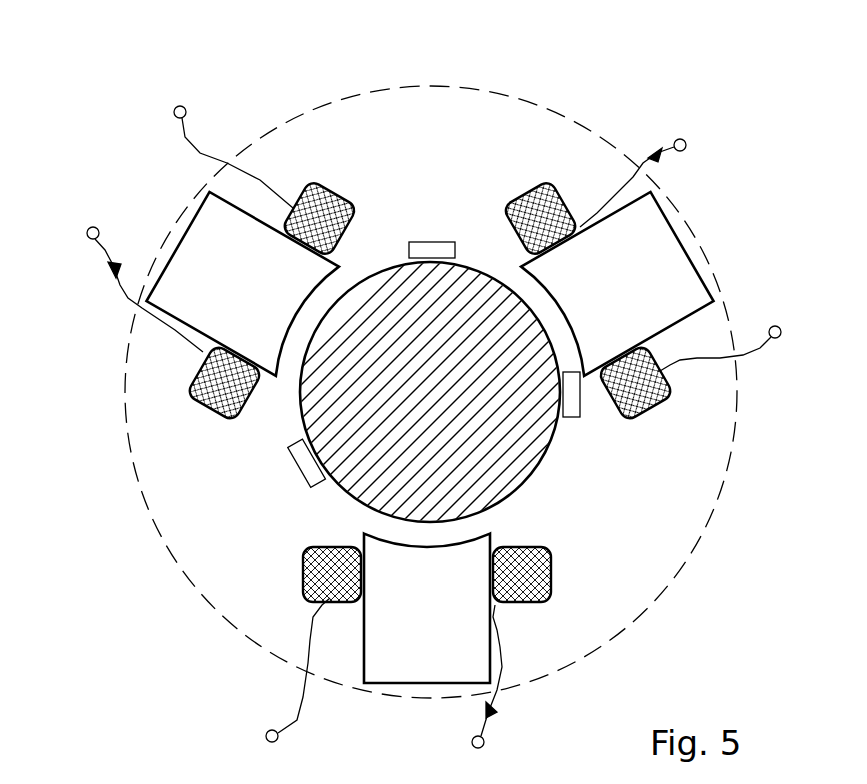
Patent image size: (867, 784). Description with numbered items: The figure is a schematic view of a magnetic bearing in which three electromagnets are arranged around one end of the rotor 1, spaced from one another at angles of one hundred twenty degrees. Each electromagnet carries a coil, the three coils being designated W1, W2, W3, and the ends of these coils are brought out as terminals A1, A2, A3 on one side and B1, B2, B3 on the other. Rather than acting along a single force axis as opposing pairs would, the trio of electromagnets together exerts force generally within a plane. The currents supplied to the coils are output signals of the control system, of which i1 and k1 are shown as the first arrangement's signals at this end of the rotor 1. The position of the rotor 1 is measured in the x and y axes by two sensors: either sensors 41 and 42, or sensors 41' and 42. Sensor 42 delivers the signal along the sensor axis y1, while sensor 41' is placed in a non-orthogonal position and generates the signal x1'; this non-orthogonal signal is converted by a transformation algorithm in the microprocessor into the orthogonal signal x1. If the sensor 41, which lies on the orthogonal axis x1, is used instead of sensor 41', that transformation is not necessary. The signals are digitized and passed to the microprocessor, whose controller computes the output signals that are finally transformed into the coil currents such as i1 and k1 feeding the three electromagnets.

The rotor (permanent magnet) 1 is at (430, 400).
The sensor 41 is at (593, 416).
The sensor 41' is at (278, 463).
The sensor 42 is at (430, 250).
The coil W1 is at (588, 205).
The coil W2 is at (303, 595).
The coil W3 is at (193, 365).
The coil end A1 is at (649, 180).
The coil end B1 is at (726, 336).
The coil end A2 is at (482, 691).
The coil end B2 is at (293, 686).
The coil end A3 is at (140, 277).
The coil end B3 is at (226, 143).
The output signal i1 is at (574, 430).
The output signal k1 is at (101, 278).
The x-axis x is at (110, 388).
The y-axis y is at (427, 717).
The orthogonal signal x1 is at (585, 566).
The sensor signal x1' is at (225, 568).
The orthogonal signal y1 is at (483, 37).